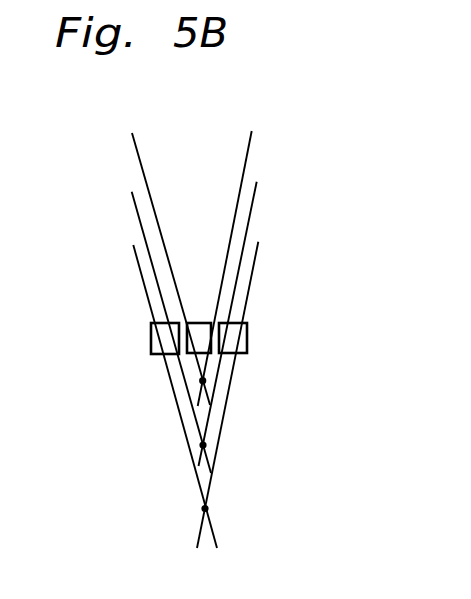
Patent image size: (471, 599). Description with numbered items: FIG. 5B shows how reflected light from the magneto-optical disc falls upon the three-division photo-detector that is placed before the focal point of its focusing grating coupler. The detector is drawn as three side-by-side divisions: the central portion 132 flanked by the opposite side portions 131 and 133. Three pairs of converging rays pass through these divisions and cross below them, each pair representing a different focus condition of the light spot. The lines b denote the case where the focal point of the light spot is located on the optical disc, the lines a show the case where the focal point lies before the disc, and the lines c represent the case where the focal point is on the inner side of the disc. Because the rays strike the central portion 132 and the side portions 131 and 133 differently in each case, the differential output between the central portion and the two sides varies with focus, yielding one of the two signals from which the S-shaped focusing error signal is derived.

The opposite side portion of three-division photo-detector 131 is at (155, 352).
The central portion of three-division photo-detector 132 is at (196, 353).
The opposite side portion of three-division photo-detector 133 is at (245, 349).
The lines a is at (189, 258).
The lines b is at (190, 320).
The lines c is at (188, 388).